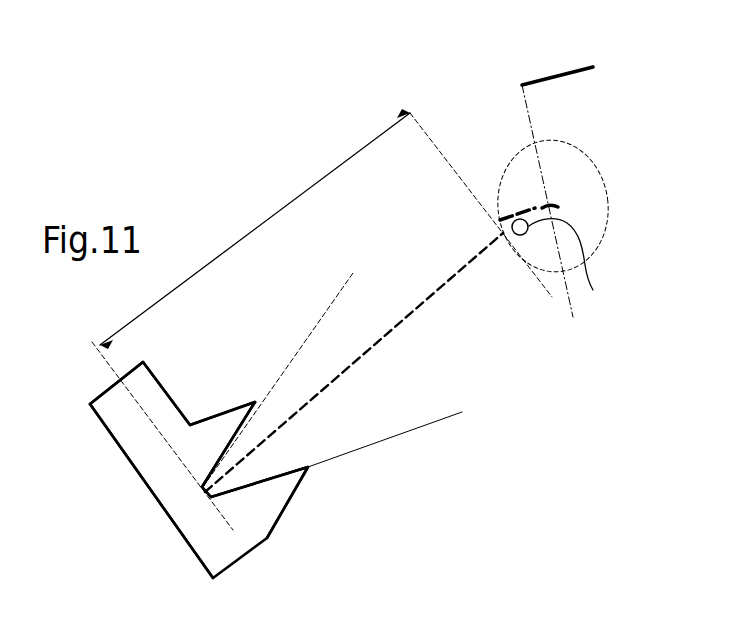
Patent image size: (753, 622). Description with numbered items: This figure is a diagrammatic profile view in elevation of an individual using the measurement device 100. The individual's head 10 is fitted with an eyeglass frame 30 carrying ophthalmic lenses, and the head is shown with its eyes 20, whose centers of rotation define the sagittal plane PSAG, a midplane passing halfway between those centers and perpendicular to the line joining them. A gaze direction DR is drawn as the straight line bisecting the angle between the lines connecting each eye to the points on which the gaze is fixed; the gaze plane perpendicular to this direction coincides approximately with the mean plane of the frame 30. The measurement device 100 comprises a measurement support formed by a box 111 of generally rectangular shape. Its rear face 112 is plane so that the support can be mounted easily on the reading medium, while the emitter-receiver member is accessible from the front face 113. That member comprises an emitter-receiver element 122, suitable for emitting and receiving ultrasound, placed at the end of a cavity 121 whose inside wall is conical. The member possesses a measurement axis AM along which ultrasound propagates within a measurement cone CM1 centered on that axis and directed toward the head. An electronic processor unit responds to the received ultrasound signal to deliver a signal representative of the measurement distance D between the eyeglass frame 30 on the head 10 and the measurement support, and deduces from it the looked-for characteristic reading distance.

The measurement device 100 is at (267, 550).
The box 111 is at (160, 485).
The rear face 112 is at (115, 440).
The front face 113 is at (173, 402).
The cavity 121 is at (282, 468).
The emitter-receiver element 122 is at (205, 492).
The head 10 is at (582, 178).
The eyes 20 is at (578, 271).
The eyeglass frame 30 is at (503, 217).
The measurement distance D is at (247, 233).
The gaze direction DR is at (407, 320).
The measurement axis AM is at (377, 340).
The measurement cone CM1 is at (423, 427).
The sagittal plane PSAG is at (572, 85).